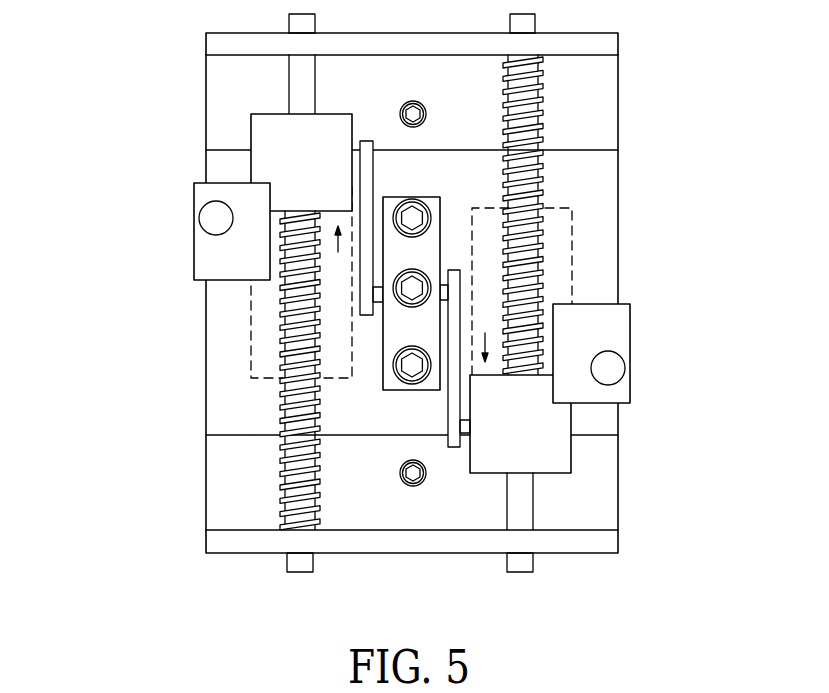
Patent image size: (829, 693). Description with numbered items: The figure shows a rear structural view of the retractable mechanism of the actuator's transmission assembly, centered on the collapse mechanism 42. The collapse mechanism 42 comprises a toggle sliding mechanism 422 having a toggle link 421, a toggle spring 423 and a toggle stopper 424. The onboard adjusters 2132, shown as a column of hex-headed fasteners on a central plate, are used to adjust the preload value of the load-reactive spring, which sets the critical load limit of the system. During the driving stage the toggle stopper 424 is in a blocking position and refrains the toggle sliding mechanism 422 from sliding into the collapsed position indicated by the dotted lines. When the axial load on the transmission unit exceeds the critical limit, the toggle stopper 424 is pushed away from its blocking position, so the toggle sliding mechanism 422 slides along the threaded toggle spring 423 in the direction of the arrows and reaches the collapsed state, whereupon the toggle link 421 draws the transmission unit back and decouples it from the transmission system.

The collapse mechanism 42 is at (102, 178).
The toggle link 421 is at (365, 261).
The toggle sliding mechanism 422 is at (276, 153).
The toggle spring 423 is at (283, 331).
The toggle stopper 424 is at (212, 248).
The onboard adjusters 2132 is at (411, 365).